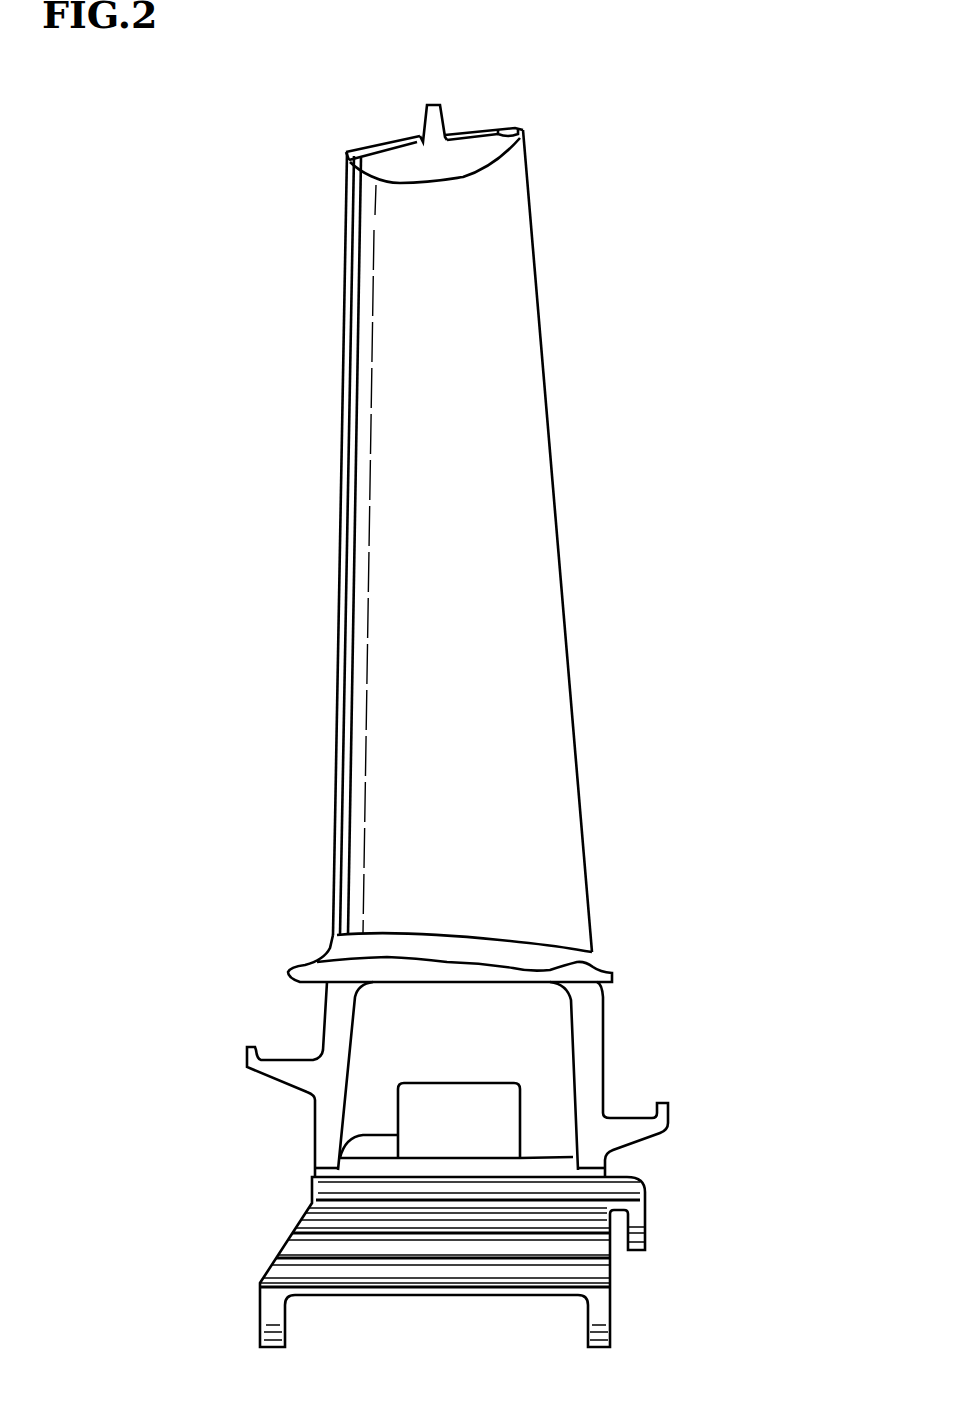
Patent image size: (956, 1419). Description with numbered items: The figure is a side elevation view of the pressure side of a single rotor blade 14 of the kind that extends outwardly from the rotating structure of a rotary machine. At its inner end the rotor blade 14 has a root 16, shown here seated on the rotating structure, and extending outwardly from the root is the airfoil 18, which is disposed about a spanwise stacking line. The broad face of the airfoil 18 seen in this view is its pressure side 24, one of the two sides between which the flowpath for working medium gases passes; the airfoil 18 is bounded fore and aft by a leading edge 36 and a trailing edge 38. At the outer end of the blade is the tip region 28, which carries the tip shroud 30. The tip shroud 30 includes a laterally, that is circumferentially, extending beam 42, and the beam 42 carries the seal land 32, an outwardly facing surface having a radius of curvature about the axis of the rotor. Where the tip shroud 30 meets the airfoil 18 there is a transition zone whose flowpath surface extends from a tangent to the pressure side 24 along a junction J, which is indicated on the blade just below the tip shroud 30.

The rotor blade 14 is at (468, 618).
The root 16 is at (455, 1247).
The airfoil 18 is at (468, 541).
The pressure side 24 is at (515, 683).
The tip region 28 is at (422, 138).
The tip shroud 30 is at (517, 122).
The seal land 32 is at (428, 104).
The leading edge 36 is at (348, 527).
The trailing edge 38 is at (555, 525).
The beam 42 is at (447, 118).
The junction J is at (503, 160).